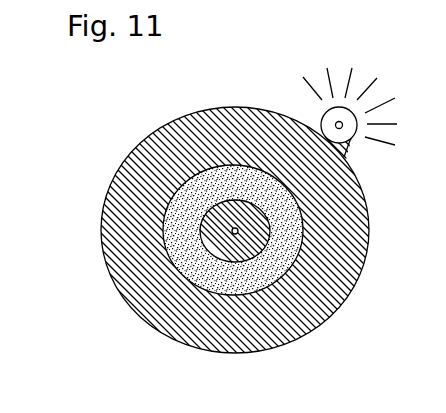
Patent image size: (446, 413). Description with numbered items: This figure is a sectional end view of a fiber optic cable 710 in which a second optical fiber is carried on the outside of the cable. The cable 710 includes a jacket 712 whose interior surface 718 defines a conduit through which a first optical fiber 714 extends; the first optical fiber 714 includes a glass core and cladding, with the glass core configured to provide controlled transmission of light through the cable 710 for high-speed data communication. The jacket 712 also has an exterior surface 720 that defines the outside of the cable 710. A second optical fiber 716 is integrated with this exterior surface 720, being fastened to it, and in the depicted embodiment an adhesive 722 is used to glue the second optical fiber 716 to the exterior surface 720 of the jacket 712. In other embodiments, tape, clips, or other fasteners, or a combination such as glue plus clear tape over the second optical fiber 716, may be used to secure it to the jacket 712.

The fiber optic cable 710 is at (84, 117).
The jacket 712 is at (345, 232).
The first optical fiber 714 is at (257, 233).
The second optical fiber 716 is at (350, 124).
The interior surface 718 is at (168, 250).
The exterior surface 720 is at (98, 191).
The adhesive 722 is at (346, 150).